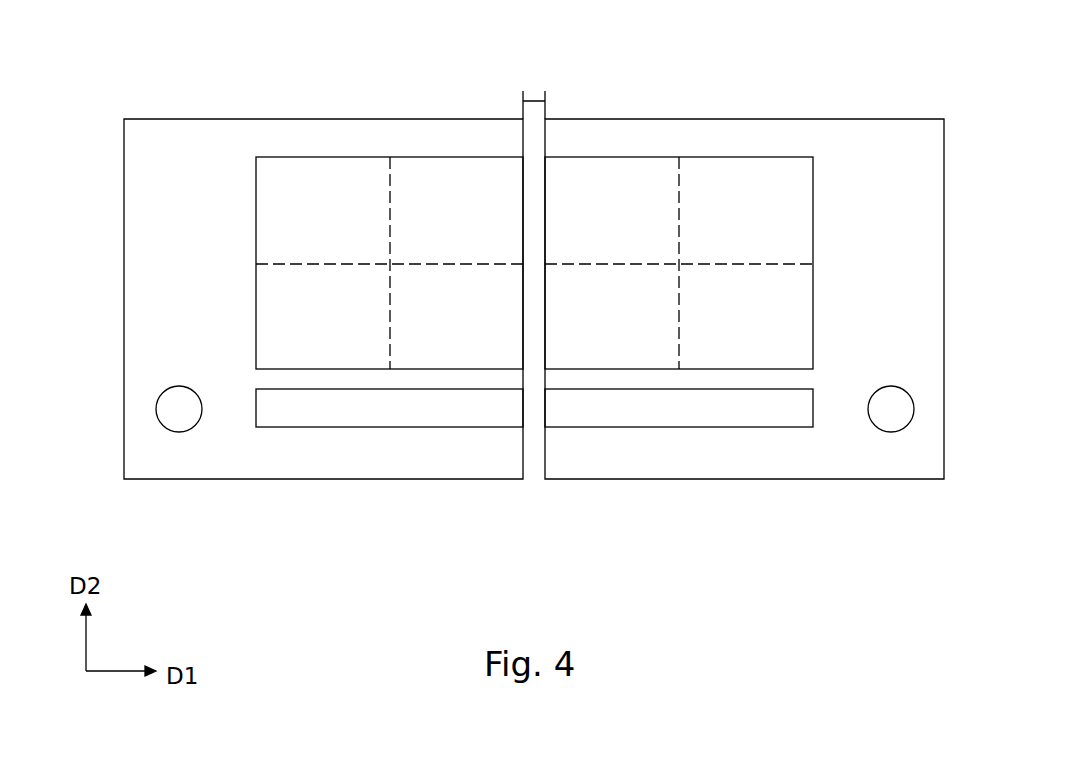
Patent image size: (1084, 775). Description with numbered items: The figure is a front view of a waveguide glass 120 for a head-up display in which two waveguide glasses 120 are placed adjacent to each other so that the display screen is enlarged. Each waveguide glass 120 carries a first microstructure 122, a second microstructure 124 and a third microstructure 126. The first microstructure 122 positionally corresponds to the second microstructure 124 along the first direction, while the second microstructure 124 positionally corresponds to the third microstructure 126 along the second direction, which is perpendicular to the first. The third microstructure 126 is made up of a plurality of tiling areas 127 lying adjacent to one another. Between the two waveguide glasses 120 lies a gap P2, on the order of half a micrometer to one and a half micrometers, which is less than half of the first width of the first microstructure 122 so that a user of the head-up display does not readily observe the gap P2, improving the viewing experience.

The waveguide glass 120 is at (123, 270).
The first microstructure 122 is at (155, 408).
The second microstructure 124 is at (300, 427).
The third microstructure 126 is at (285, 155).
The tiling areas 127 is at (360, 172).
The gap P2 is at (533, 98).